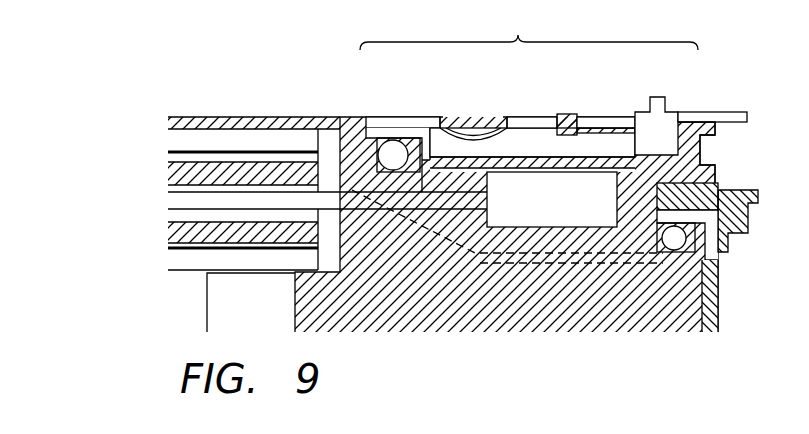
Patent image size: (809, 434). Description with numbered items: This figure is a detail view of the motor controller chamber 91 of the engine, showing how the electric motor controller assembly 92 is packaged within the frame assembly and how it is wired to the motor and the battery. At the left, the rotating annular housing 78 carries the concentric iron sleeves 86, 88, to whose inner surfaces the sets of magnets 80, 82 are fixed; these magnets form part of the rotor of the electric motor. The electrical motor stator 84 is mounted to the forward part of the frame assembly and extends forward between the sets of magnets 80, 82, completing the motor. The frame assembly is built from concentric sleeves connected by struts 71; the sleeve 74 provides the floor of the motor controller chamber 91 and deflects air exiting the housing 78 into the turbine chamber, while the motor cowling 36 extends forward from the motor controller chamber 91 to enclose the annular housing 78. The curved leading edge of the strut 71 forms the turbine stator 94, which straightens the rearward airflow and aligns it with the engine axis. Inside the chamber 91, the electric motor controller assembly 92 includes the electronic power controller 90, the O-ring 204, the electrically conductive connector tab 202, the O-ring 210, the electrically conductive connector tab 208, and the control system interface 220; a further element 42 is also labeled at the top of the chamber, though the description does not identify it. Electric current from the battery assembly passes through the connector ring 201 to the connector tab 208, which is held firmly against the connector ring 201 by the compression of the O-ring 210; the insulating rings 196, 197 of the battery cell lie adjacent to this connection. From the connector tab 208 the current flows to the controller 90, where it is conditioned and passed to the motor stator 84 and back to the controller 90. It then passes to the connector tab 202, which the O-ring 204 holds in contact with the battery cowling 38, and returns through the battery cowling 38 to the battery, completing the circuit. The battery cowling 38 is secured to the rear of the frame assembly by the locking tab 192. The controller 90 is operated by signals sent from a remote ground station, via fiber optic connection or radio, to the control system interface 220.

The motor cowling 36 is at (282, 119).
The battery cowling 38 is at (593, 117).
The diaphragm 42 is at (502, 116).
The strut 71 is at (517, 311).
The sleeve 74 is at (422, 250).
The annular housing 78 is at (172, 140).
The set of magnets 80 is at (172, 178).
The set of magnets 82 is at (172, 226).
The electrical motor stator 84 is at (172, 200).
The iron sleeve 86 is at (172, 157).
The iron sleeve 88 is at (172, 249).
The electronic power controller 90 is at (537, 213).
The motor controller chamber 91 is at (545, 153).
The electric motor controller assembly 92 is at (529, 28).
The turbine stator 94 is at (269, 317).
The locking tab 192 is at (563, 114).
The insulating ring 196 is at (718, 290).
The insulating ring 197 is at (710, 158).
The connector ring 201 is at (717, 258).
The electrically conductive connector tab 202 is at (423, 117).
The O-ring 204 is at (382, 117).
The electrically conductive connector tab 208 is at (622, 227).
The O-ring 210 is at (720, 192).
The control system interface 220 is at (673, 112).